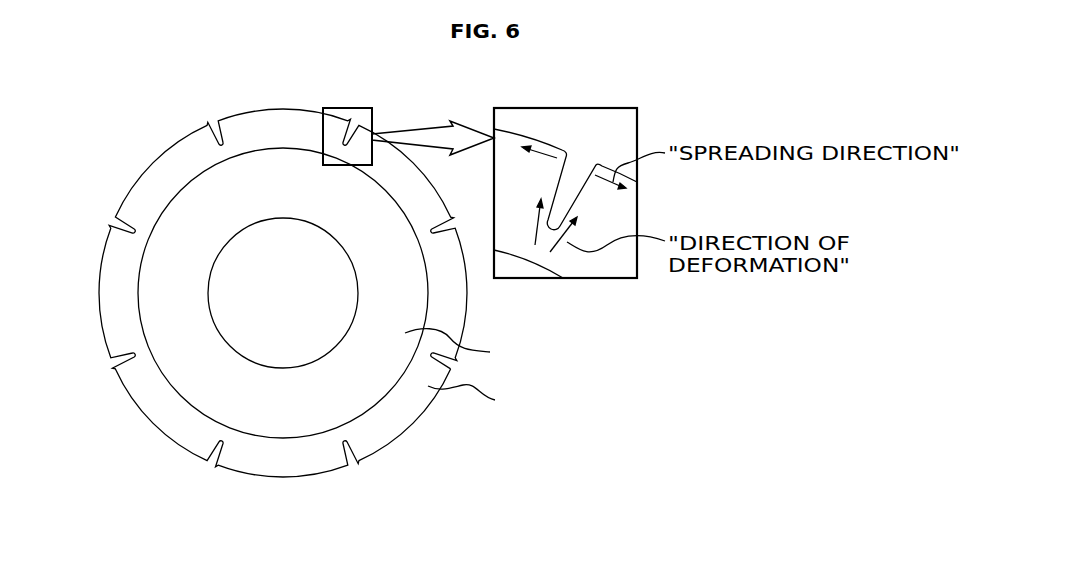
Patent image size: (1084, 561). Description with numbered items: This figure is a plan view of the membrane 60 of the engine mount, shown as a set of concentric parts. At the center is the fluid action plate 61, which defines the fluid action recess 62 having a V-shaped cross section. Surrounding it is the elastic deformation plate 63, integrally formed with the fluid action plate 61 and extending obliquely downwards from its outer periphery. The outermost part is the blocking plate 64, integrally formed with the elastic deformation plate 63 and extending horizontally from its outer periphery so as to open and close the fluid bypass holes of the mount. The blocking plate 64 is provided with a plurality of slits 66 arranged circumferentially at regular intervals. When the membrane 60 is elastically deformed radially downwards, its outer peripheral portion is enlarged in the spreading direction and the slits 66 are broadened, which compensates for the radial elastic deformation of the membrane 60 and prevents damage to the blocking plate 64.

The membrane 60 is at (281, 462).
The fluid action plate 61 is at (330, 333).
The fluid action recess 62 is at (277, 295).
The elastic deformation plate 63 is at (460, 347).
The blocking plate 64 is at (597, 258).
The slits 66 is at (568, 170).